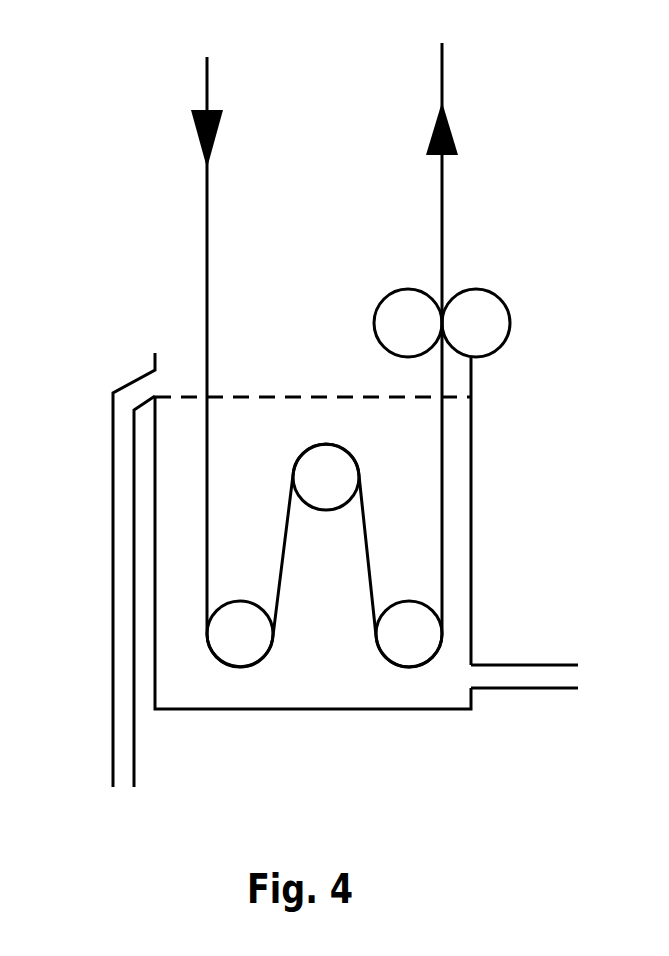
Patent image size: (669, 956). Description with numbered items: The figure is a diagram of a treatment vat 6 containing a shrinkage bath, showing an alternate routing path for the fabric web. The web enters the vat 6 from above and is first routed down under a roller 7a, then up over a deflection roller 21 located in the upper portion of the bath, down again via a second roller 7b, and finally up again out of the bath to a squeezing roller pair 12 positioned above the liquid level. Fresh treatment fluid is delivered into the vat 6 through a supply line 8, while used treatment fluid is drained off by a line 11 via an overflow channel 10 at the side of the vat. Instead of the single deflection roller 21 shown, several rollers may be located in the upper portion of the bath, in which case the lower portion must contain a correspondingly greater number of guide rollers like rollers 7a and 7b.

The treatment vat 6 is at (321, 525).
The roller 7a is at (242, 632).
The roller 7b is at (402, 633).
The supply line 8 is at (542, 677).
The overflow channel 10 is at (133, 392).
The line 11 is at (122, 652).
The squeezing roller pair 12 is at (476, 325).
The deflection roller 21 is at (328, 470).